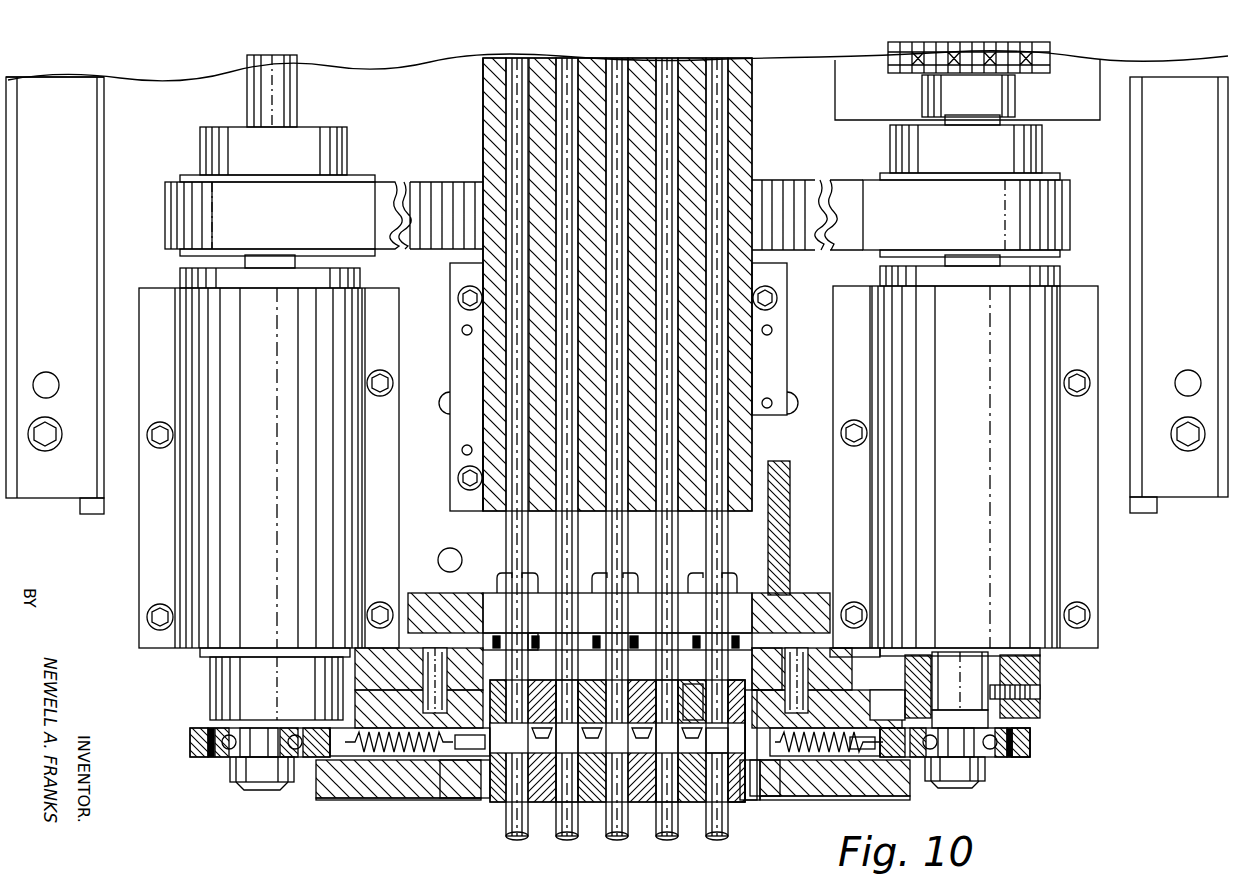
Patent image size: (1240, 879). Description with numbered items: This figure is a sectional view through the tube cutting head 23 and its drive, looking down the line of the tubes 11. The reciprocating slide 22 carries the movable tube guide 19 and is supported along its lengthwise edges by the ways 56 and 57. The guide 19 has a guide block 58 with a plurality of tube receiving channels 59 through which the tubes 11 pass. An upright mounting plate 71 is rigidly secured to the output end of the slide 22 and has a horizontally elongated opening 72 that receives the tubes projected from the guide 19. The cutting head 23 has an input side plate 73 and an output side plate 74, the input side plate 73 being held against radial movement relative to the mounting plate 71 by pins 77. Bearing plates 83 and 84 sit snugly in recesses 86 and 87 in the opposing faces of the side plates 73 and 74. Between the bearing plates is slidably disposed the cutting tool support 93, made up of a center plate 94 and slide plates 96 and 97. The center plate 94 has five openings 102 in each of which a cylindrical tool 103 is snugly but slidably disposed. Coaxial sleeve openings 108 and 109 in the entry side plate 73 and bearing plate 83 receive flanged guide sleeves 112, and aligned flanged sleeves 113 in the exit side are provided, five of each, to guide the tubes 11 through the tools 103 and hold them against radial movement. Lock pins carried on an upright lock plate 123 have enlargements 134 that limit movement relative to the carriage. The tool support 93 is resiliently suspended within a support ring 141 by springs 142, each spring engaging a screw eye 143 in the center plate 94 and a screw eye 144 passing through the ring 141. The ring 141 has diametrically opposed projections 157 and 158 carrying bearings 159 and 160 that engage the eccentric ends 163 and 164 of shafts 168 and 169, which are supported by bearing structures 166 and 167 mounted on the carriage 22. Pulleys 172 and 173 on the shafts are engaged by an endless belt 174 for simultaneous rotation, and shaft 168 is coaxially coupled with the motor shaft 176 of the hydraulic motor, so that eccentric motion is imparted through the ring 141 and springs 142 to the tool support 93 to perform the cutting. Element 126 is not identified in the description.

The tube 11 is at (722, 62).
The movable tube guide 19 is at (478, 133).
The reciprocating slide 22 is at (155, 95).
The cutting head 23 is at (352, 815).
The way 56 is at (1185, 490).
The way 57 is at (58, 490).
The guide block 58 is at (493, 103).
The tube receiving channel 59 is at (725, 358).
The mounting plate 71 is at (870, 645).
The horizontally elongated opening 72 is at (490, 640).
The input side plate 73 is at (890, 662).
The output side plate 74 is at (836, 795).
The pin 77 is at (848, 650).
The bearing plate 83 is at (752, 705).
The bearing plate 84 is at (756, 790).
The recess 86 is at (803, 700).
The recess 87 is at (762, 770).
The cutting tool support 93 is at (470, 780).
The center plate 94 is at (470, 750).
The slide plate 96 is at (488, 725).
The slide plate 97 is at (482, 770).
The opening 102 is at (748, 800).
The cylindrical tool 103 is at (656, 800).
The sleeve opening 108 is at (710, 700).
The sleeve opening 109 is at (726, 752).
The flanged guide sleeve 112 is at (745, 680).
The flanged sleeve 113 is at (596, 808).
The lock plate 123 is at (828, 580).
The column 126 is at (752, 578).
The enlargement 134 is at (536, 632).
The support ring 141 is at (1038, 742).
The spring 142 is at (848, 778).
The screw eye 143 is at (786, 770).
The screw eye 144 is at (862, 738).
The projection 157 is at (1022, 757).
The projection 158 is at (190, 735).
The bearing 159 is at (995, 757).
The bearing 160 is at (224, 757).
The eccentric end 163 is at (952, 770).
The eccentric end 164 is at (255, 782).
The bearing structure 166 is at (965, 451).
The bearing structure 167 is at (269, 451).
The shaft 168 is at (965, 662).
The shaft 169 is at (292, 62).
The pulley 172 is at (1072, 183).
The pulley 173 is at (168, 185).
The endless belt 174 is at (790, 192).
The motor shaft 176 is at (1050, 52).